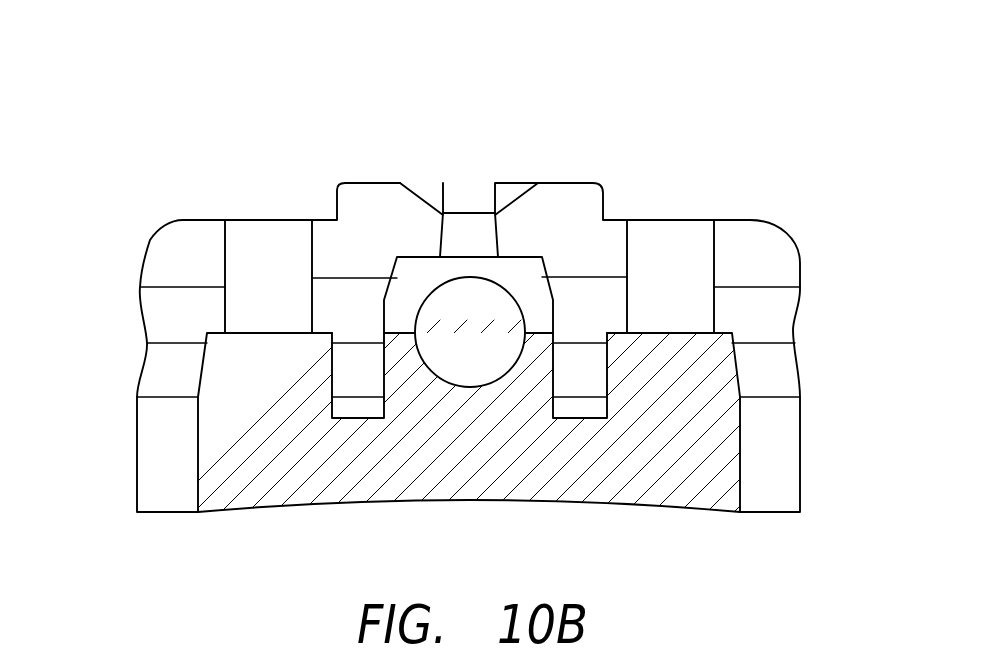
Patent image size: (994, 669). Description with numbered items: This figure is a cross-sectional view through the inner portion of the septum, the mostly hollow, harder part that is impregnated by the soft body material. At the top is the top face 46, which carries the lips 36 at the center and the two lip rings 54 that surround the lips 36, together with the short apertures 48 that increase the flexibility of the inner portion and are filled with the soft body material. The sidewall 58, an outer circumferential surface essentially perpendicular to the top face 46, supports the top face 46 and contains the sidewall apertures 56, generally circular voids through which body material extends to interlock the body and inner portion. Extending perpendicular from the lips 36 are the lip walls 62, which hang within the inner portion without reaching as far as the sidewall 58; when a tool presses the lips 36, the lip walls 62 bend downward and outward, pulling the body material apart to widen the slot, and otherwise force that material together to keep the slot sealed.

The lips 36 is at (513, 190).
The top face 46 is at (765, 222).
The short apertures 48 is at (264, 238).
The lip rings 54 is at (573, 193).
The sidewall apertures 56 is at (473, 334).
The sidewall 58 is at (802, 452).
The lip walls 62 is at (580, 370).